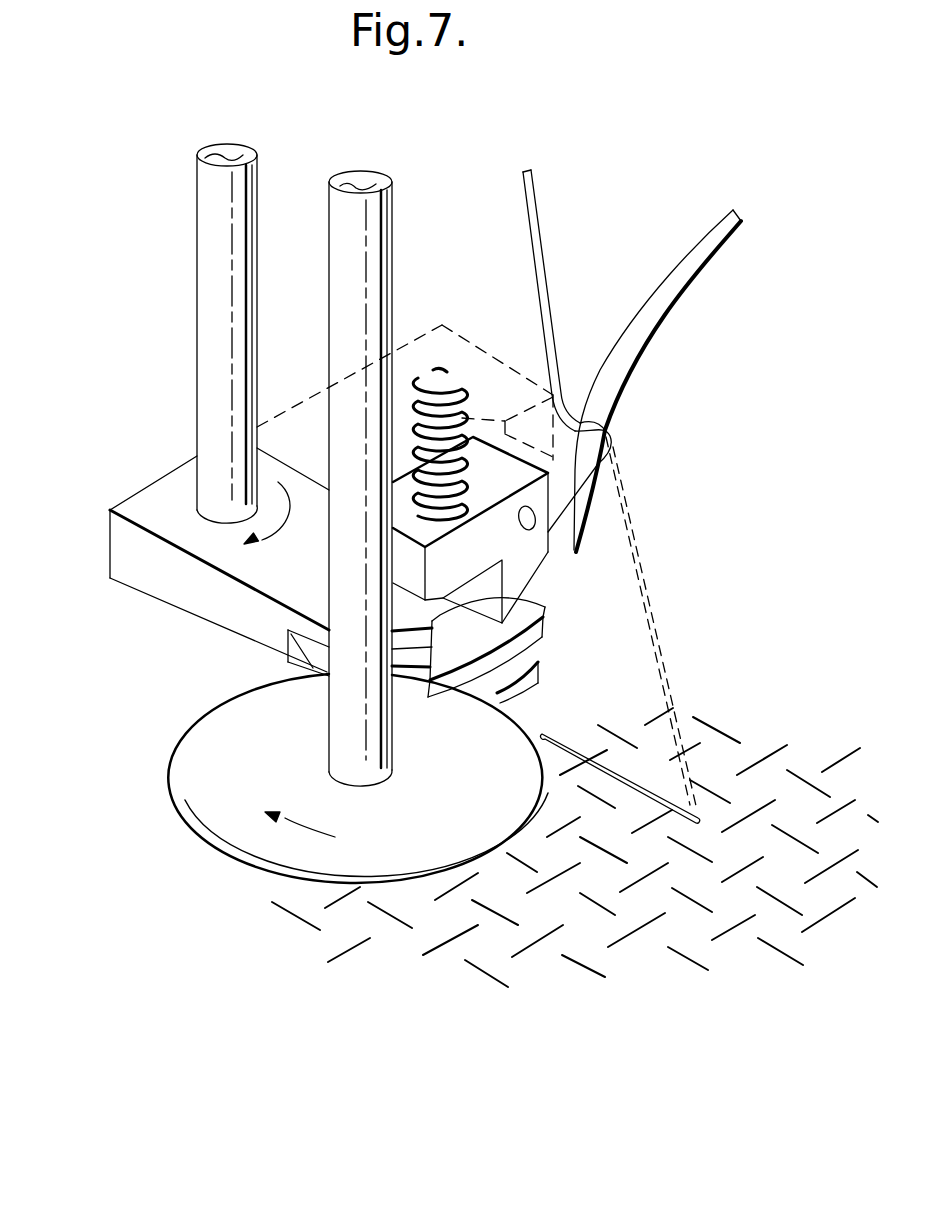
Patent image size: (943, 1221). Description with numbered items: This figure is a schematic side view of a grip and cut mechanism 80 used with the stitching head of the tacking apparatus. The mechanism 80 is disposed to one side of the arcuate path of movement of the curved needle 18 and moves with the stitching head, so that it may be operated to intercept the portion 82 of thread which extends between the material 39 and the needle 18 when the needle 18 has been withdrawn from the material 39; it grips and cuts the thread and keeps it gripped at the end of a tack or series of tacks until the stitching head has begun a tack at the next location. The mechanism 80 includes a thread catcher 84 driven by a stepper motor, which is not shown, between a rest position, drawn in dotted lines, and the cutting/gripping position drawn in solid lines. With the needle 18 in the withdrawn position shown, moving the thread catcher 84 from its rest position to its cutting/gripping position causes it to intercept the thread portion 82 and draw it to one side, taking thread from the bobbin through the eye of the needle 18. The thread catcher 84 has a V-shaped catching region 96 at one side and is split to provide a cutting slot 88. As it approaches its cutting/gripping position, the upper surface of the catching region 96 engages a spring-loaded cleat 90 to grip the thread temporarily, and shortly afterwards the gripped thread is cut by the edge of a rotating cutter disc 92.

The needle 18 is at (660, 292).
The material 39 is at (530, 940).
The grip and cut mechanism 80 is at (175, 342).
The portion of thread 82 is at (630, 533).
The thread catcher 84 is at (182, 622).
The cutting slot 88 is at (560, 657).
The spring-loaded cleat 90 is at (535, 570).
The rotating cutter disc 92 is at (180, 773).
The V-shaped catching region 96 is at (410, 678).